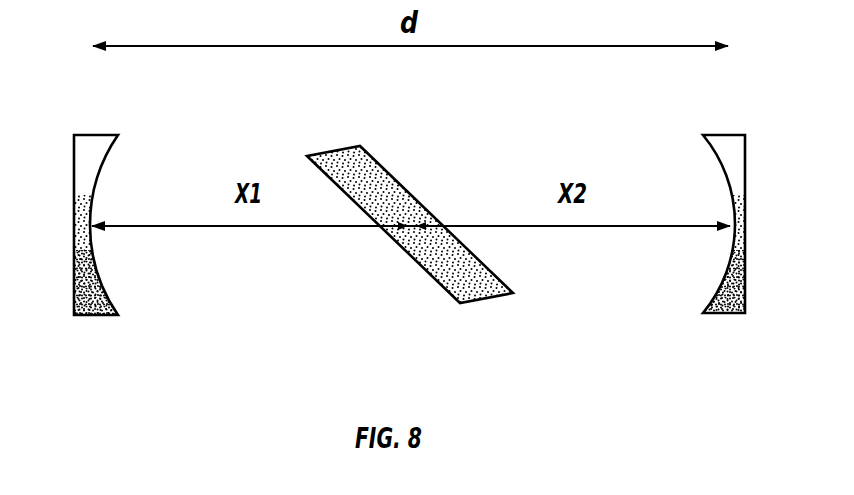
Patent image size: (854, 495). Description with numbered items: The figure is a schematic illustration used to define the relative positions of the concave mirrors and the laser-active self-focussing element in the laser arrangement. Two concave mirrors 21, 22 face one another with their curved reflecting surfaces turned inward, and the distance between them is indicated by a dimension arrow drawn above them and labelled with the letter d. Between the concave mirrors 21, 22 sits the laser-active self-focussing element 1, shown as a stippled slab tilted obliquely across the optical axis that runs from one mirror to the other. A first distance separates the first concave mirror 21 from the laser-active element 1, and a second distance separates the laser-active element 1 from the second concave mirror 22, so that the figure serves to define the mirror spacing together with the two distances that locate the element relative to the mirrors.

The concave mirror 21 is at (97, 330).
The laser-active self-focussing element 1 is at (448, 330).
The concave mirror 22 is at (728, 330).